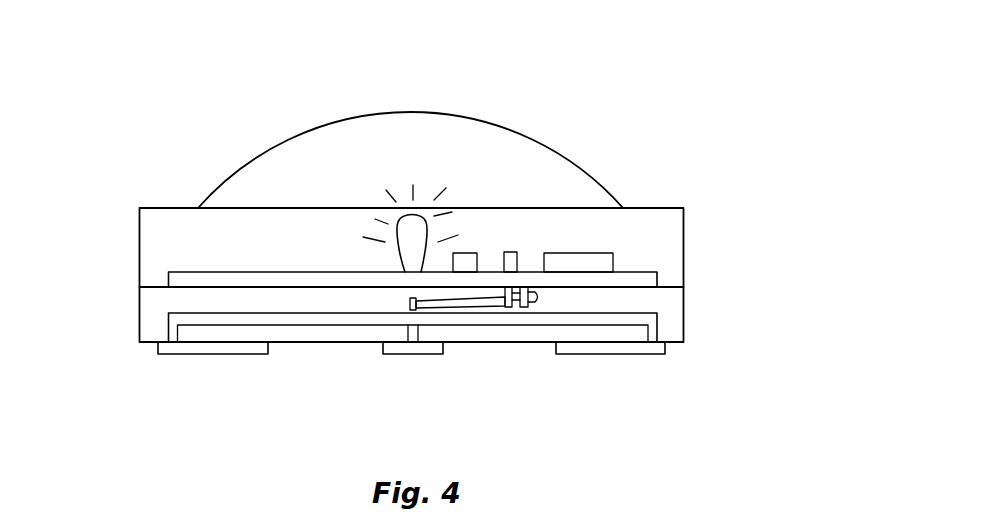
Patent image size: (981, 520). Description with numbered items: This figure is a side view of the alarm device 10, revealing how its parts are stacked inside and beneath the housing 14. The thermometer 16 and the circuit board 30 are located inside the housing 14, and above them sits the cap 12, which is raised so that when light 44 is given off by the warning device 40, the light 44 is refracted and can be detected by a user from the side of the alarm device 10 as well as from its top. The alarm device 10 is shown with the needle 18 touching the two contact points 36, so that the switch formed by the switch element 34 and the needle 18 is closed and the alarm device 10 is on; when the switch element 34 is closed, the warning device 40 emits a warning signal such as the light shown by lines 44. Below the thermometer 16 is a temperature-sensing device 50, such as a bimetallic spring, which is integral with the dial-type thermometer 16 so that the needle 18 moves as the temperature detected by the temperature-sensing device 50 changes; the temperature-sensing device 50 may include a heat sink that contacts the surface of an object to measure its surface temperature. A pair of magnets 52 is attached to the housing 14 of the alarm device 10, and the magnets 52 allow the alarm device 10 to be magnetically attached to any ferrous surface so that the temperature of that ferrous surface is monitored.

The alarm device 10 is at (388, 93).
The cap 12 is at (533, 134).
The housing 14 is at (684, 298).
The thermometer 16 is at (168, 316).
The needle 18 is at (438, 298).
The circuit board 30 is at (168, 283).
The switch element 34 is at (513, 252).
The contact points 36 is at (540, 297).
The warning device 40 is at (398, 252).
The light 44 is at (405, 196).
The temperature-sensing device 50 is at (418, 354).
The magnets 52 is at (193, 355).